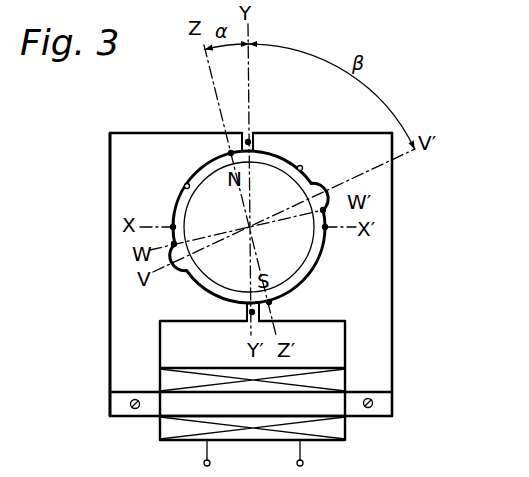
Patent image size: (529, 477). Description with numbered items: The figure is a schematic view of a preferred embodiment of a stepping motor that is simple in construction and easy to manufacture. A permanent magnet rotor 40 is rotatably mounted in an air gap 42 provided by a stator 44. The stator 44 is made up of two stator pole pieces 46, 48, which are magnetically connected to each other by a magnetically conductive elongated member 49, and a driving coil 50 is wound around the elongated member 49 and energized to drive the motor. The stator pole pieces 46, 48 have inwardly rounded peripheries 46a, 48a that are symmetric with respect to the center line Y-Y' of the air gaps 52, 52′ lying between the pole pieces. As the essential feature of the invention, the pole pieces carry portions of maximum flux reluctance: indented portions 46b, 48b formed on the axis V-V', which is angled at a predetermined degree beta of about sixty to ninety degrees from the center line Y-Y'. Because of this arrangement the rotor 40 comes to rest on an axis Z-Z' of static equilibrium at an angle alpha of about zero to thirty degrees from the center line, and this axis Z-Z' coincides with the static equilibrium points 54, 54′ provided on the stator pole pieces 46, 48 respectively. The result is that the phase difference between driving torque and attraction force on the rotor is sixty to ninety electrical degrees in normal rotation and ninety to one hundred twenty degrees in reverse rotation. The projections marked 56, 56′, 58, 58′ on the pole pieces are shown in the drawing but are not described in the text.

The permanent magnet rotor 40 is at (391, 258).
The air gap 42 is at (301, 268).
The stator 44 is at (398, 352).
The stator pole piece 46 is at (122, 306).
The inwardly rounded periphery 46a is at (186, 185).
The indented portion 46b is at (170, 284).
The stator pole piece 48 is at (390, 297).
The inwardly rounded periphery 48a is at (302, 166).
The indented portion 48b is at (323, 186).
The magnetically conductive elongated member 49 is at (340, 404).
The driving coil 50 is at (346, 427).
The air gap 52 is at (247, 140).
The air gap 52′ is at (252, 314).
The static equilibrium point 54 is at (230, 152).
The static equilibrium point 54′ is at (271, 302).
The pole projection 56 is at (172, 226).
The pole projection 56′ is at (327, 231).
The pole projection 58 is at (173, 244).
The pole projection 58′ is at (328, 210).